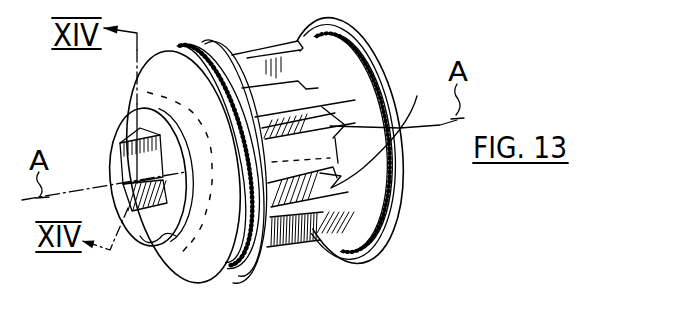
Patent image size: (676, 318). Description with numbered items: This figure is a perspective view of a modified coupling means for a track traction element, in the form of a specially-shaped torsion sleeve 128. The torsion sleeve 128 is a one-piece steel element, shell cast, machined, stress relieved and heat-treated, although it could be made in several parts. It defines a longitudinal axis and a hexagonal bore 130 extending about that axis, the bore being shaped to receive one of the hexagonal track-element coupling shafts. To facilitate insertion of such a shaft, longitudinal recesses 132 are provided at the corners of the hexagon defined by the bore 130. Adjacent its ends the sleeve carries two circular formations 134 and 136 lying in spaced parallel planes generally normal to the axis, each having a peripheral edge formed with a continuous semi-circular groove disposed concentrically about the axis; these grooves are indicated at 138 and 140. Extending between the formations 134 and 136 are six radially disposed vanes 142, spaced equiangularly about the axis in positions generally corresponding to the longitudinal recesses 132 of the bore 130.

The torsion sleeve 128 is at (399, 233).
The hexagonal bore 130 is at (140, 240).
The longitudinal recesses 132 is at (184, 170).
The circular formation 134 is at (246, 286).
The circular formation 136 is at (367, 263).
The semi-circular groove 138 is at (216, 60).
The semi-circular groove 140 is at (358, 41).
The vanes 142 is at (293, 68).